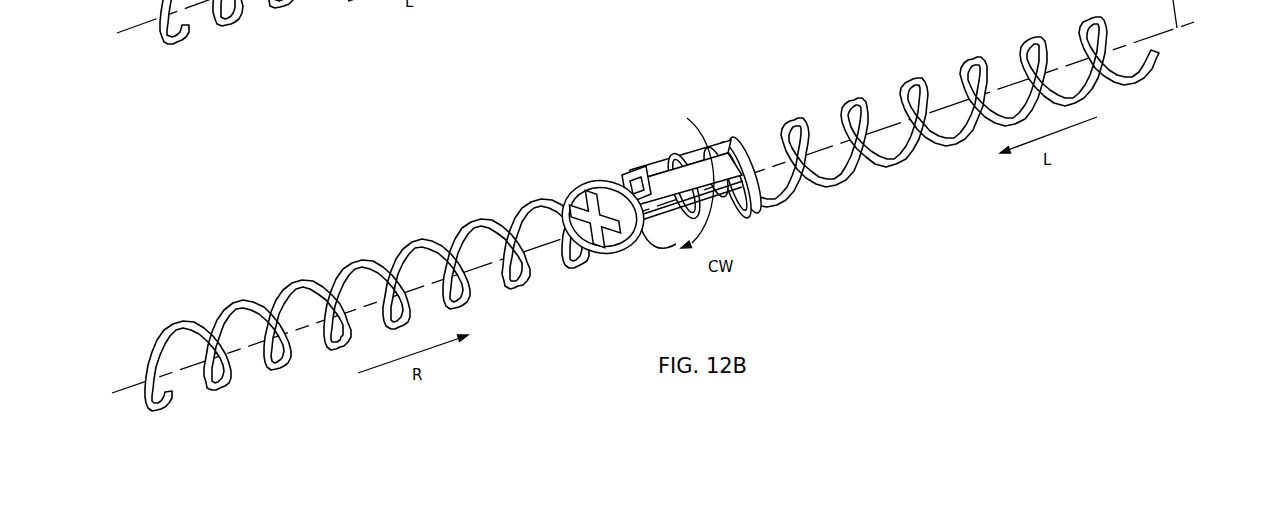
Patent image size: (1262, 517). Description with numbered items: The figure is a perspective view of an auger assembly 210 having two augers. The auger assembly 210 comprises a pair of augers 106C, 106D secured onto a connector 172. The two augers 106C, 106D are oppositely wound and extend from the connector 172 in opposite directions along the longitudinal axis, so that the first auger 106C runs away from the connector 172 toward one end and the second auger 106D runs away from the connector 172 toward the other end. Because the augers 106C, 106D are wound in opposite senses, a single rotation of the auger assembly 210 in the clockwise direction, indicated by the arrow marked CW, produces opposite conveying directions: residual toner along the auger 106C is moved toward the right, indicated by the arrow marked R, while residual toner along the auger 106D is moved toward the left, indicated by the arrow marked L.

The auger 106C is at (358, 262).
The auger 106D is at (972, 61).
The auger assembly 210 is at (652, 200).
The connector 172 is at (660, 238).